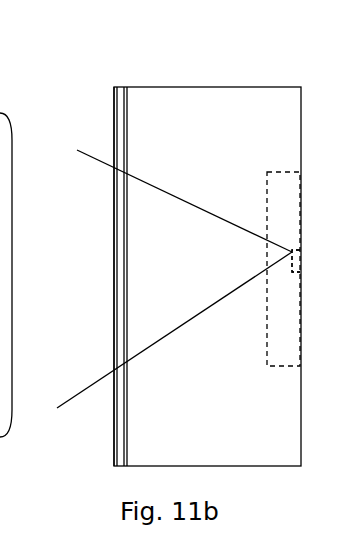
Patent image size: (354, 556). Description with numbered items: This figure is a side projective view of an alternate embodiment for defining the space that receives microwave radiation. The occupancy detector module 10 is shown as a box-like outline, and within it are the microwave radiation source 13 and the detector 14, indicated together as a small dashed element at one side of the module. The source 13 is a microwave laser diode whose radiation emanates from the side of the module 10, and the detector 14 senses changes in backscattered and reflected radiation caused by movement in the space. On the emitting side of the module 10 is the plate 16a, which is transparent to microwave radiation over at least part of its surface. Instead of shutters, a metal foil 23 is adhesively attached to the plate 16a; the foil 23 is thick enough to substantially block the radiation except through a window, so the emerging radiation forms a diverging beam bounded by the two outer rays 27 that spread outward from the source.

The occupancy detector module 10 is at (267, 173).
The microwave radiation source 13 is at (296, 261).
The detector 14 is at (295, 250).
The plate 16a is at (122, 127).
The metal foil 23 is at (113, 90).
The outer rays 27 is at (97, 159).